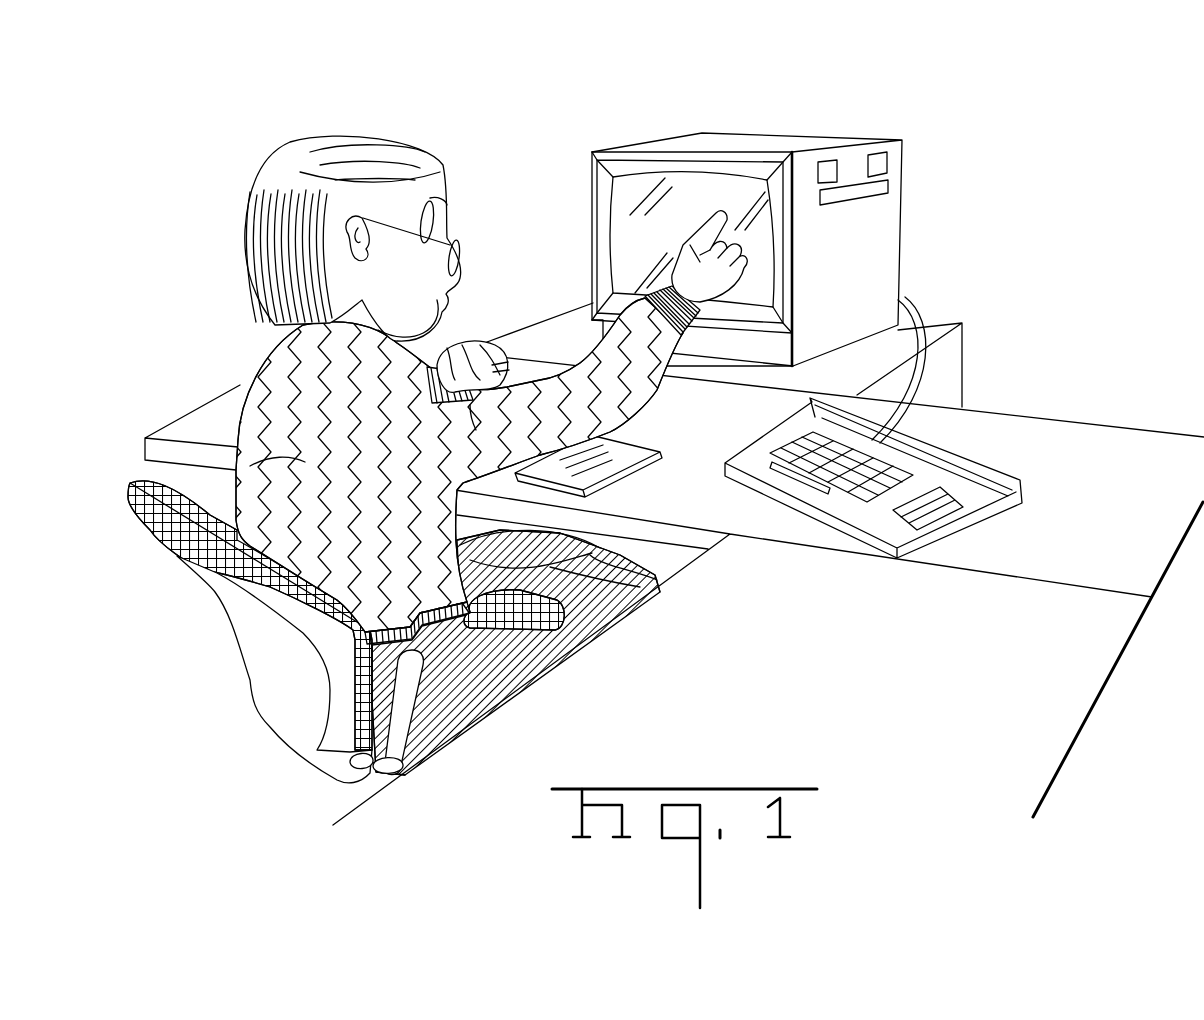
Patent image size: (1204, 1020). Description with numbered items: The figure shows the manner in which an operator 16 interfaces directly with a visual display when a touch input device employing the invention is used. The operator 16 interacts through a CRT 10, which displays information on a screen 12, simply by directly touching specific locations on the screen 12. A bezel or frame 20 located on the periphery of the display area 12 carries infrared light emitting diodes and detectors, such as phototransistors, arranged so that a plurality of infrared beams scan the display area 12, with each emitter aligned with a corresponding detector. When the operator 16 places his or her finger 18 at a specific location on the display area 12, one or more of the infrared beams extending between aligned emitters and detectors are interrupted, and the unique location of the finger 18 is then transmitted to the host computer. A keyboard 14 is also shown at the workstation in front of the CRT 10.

The CRT 10 is at (933, 252).
The screen 12 is at (615, 229).
The keyboard 14 is at (951, 444).
The operator 16 is at (397, 122).
The finger 18 is at (713, 214).
The bezel or frame 20 is at (593, 203).